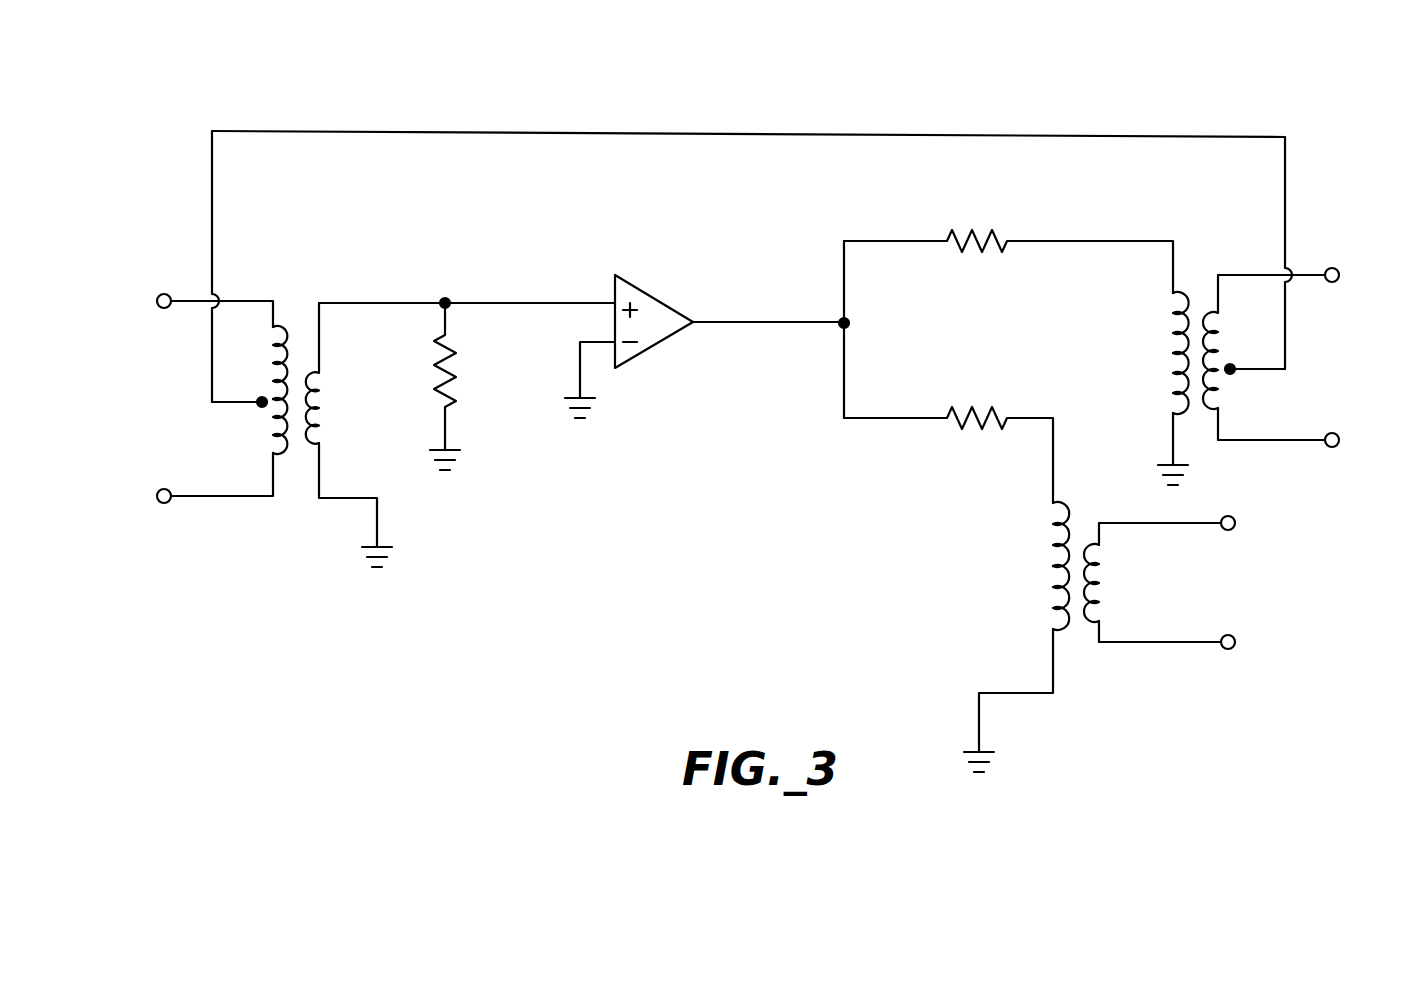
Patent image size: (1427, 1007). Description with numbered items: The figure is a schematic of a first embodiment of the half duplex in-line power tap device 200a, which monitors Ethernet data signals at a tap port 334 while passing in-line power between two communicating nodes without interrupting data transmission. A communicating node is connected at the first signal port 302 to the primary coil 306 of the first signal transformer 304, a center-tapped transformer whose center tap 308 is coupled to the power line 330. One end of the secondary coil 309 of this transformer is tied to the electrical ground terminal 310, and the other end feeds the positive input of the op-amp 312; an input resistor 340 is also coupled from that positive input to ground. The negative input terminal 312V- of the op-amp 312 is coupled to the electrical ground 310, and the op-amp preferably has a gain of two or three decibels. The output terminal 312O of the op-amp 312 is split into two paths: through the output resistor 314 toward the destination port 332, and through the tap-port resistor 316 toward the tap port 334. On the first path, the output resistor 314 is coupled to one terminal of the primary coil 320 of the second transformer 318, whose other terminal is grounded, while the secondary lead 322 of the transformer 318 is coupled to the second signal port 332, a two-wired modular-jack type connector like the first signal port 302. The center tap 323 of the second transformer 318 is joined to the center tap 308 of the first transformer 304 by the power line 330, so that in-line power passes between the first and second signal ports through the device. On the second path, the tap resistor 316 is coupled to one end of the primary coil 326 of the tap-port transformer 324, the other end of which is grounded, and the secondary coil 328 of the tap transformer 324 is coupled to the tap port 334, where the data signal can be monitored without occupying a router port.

The half duplex in-line power tap device 200a is at (848, 88).
The first signal port 302 is at (163, 362).
The first signal transformer 304 is at (218, 300).
The primary coil 306 is at (270, 452).
The center tap 308 is at (242, 406).
The secondary coil 309 is at (320, 386).
The electrical ground terminal 310 is at (362, 547).
The op-amp 312 is at (660, 300).
The negative input terminal 312V- is at (581, 342).
The output terminal 312O is at (786, 327).
The output resistor 314 is at (982, 240).
The tap-port resistor 316 is at (980, 417).
The second transformer 318 is at (1172, 258).
The primary coil 320 is at (1172, 402).
The secondary lead 322 is at (1218, 388).
The center tap 323 is at (1258, 370).
The tap-port transformer 324 is at (1050, 488).
The primary coil 326 is at (1052, 617).
The secondary coil 328 is at (1107, 577).
The power line 330 is at (553, 130).
The destination port 332 is at (1325, 343).
The tap port 334 is at (1265, 573).
The output resistor 340 is at (454, 380).